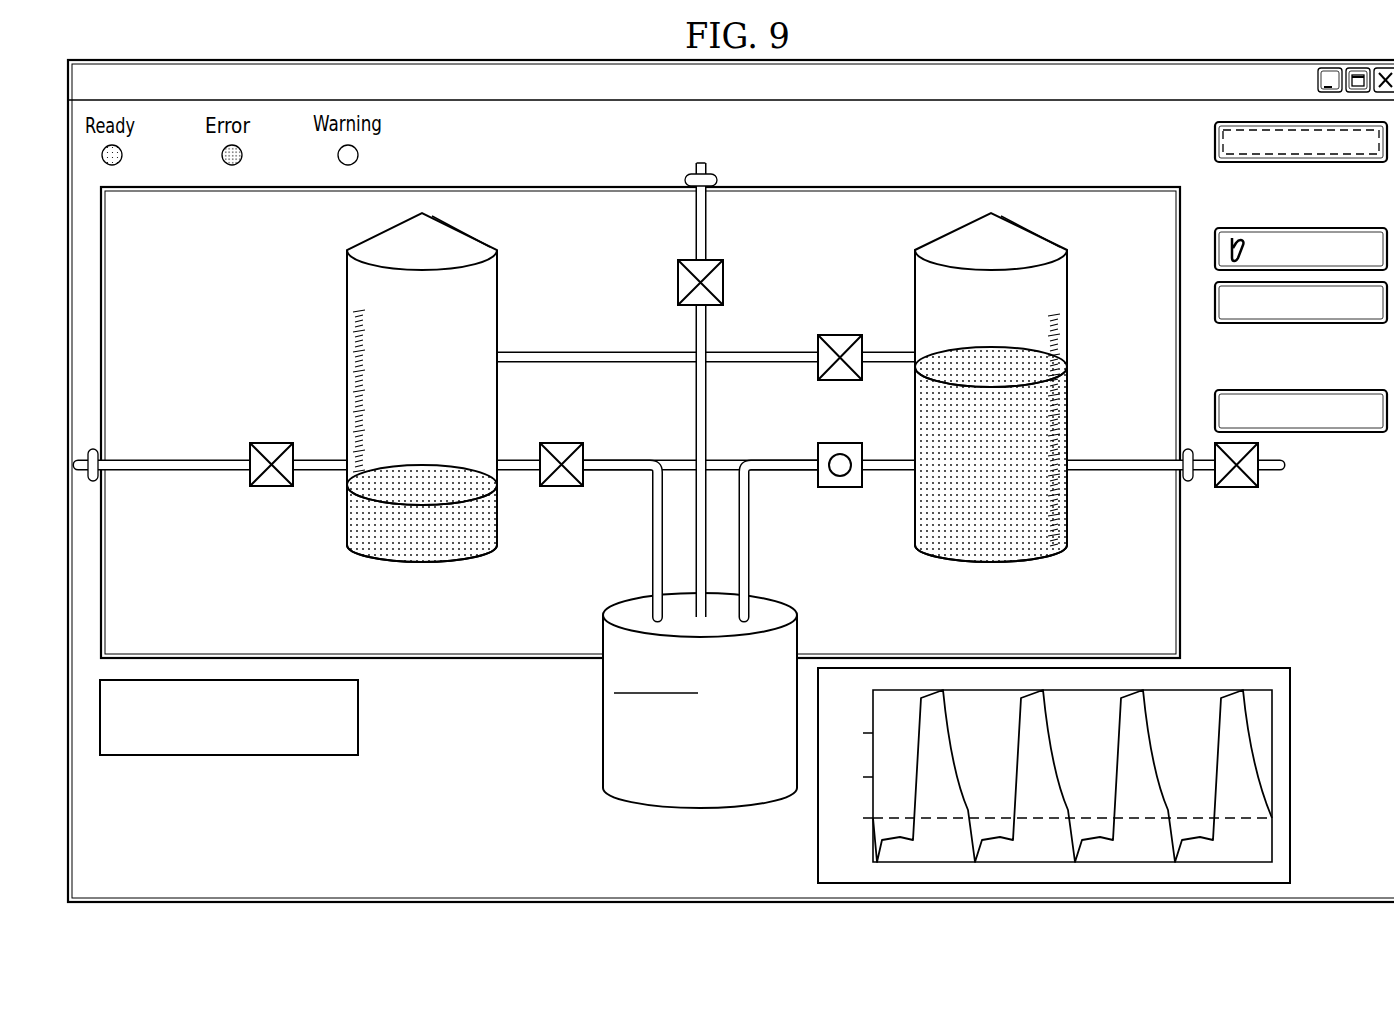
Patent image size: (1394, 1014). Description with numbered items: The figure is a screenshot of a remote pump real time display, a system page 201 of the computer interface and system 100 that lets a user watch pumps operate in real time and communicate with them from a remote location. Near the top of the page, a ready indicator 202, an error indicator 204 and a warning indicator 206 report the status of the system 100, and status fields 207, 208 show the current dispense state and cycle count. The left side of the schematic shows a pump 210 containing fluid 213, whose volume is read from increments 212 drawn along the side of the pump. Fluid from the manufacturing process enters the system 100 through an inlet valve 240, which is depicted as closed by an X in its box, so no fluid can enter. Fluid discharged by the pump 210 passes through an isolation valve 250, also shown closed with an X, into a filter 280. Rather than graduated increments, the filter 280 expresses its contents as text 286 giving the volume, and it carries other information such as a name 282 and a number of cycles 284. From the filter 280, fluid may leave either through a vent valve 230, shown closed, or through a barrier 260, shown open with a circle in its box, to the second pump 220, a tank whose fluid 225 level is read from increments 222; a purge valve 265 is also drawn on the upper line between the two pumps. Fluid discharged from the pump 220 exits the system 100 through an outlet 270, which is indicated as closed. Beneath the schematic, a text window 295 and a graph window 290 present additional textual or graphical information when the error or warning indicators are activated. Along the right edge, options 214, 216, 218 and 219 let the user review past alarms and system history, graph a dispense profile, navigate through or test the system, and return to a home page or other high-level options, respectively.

The system page 201 is at (990, 50).
The system 100 is at (880, 186).
The ready indicator 202 is at (122, 155).
The error indicator 204 is at (242, 155).
The warning indicator 206 is at (358, 155).
The dispense status field 207 is at (232, 220).
The cycle count field 208 is at (242, 250).
The pump 210 is at (382, 428).
The increments 212 is at (345, 396).
The fluid 213 is at (413, 552).
The pump 220 is at (1030, 428).
The increments 222 is at (1068, 330).
The fluid in second pump 225 is at (1000, 552).
The vent valve 230 is at (676, 282).
The inlet valve 240 is at (272, 488).
The isolation valve 250 is at (561, 488).
The barrier 260 is at (840, 488).
The purge valve 265 is at (840, 333).
The outlet 270 is at (1236, 488).
The filter 280 is at (680, 812).
The name 282 is at (610, 681).
The number of cycles 284 is at (610, 722).
The text 286 is at (610, 765).
The window 290 is at (1291, 775).
The window 295 is at (213, 757).
The option 214 is at (1284, 389).
The option 216 is at (1318, 324).
The option 218 is at (1284, 227).
The option 219 is at (1318, 163).